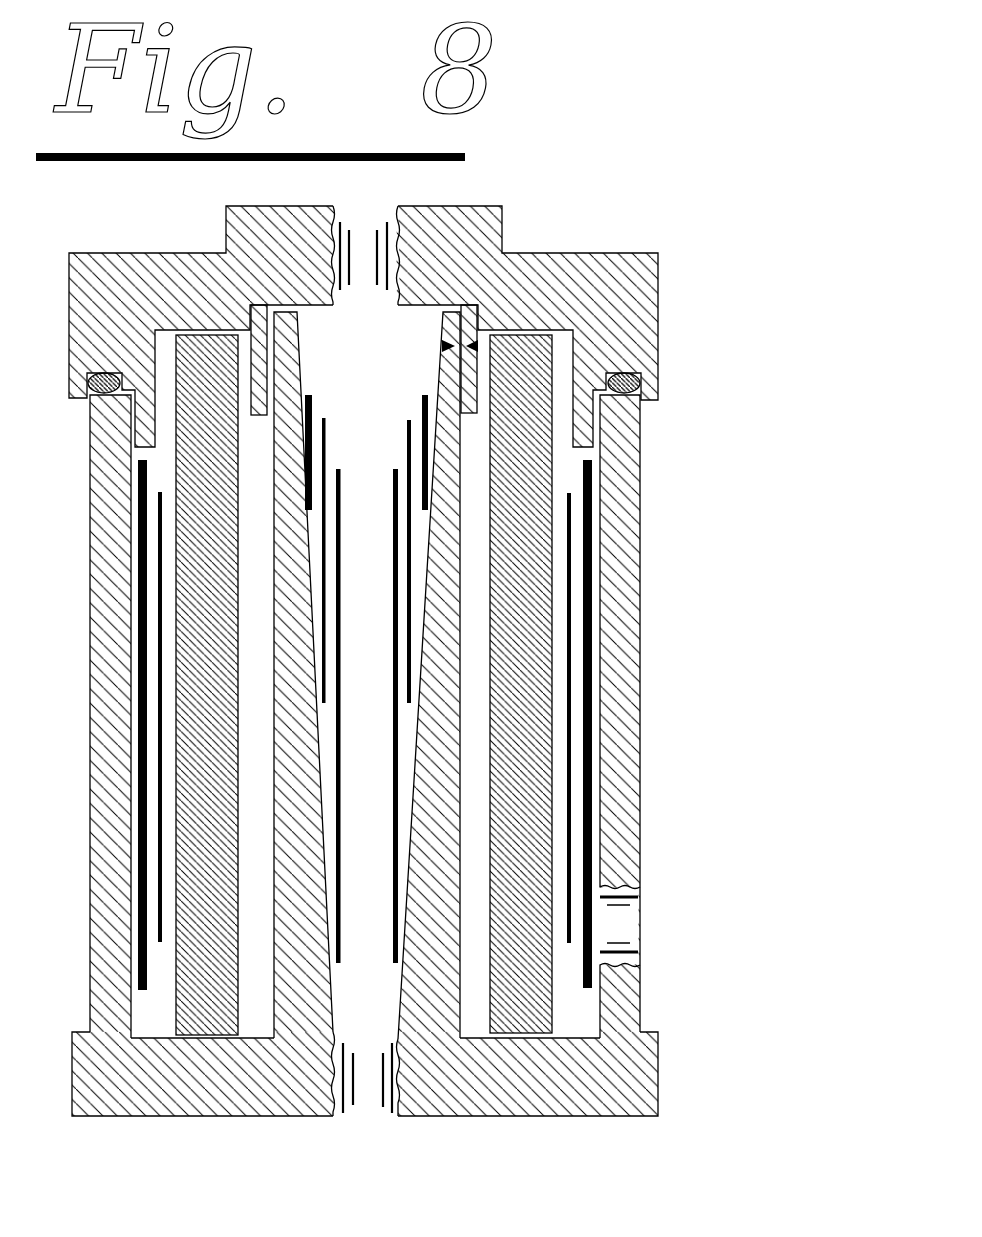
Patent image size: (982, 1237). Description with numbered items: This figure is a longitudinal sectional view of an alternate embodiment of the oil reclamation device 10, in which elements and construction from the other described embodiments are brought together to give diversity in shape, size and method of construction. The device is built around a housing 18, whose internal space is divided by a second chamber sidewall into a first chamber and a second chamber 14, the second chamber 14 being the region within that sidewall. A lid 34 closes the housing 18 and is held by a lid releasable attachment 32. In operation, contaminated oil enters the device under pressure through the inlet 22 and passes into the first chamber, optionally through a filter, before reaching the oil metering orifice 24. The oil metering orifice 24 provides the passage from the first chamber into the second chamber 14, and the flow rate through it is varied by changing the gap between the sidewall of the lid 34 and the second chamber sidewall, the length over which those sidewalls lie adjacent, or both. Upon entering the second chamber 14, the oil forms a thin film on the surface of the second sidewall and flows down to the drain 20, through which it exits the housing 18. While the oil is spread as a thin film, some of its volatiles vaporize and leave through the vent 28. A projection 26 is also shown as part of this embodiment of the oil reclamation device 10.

The oil reclamation device 10 is at (452, 687).
The second chamber 14 is at (365, 868).
The housing 18 is at (618, 1080).
The drain 20 is at (368, 1075).
The inlet 22 is at (638, 922).
The oil metering orifice 24 is at (478, 355).
The projection 26 is at (470, 397).
The vent 28 is at (370, 253).
The lid releasable attachment 32 is at (587, 410).
The lid 34 is at (600, 303).